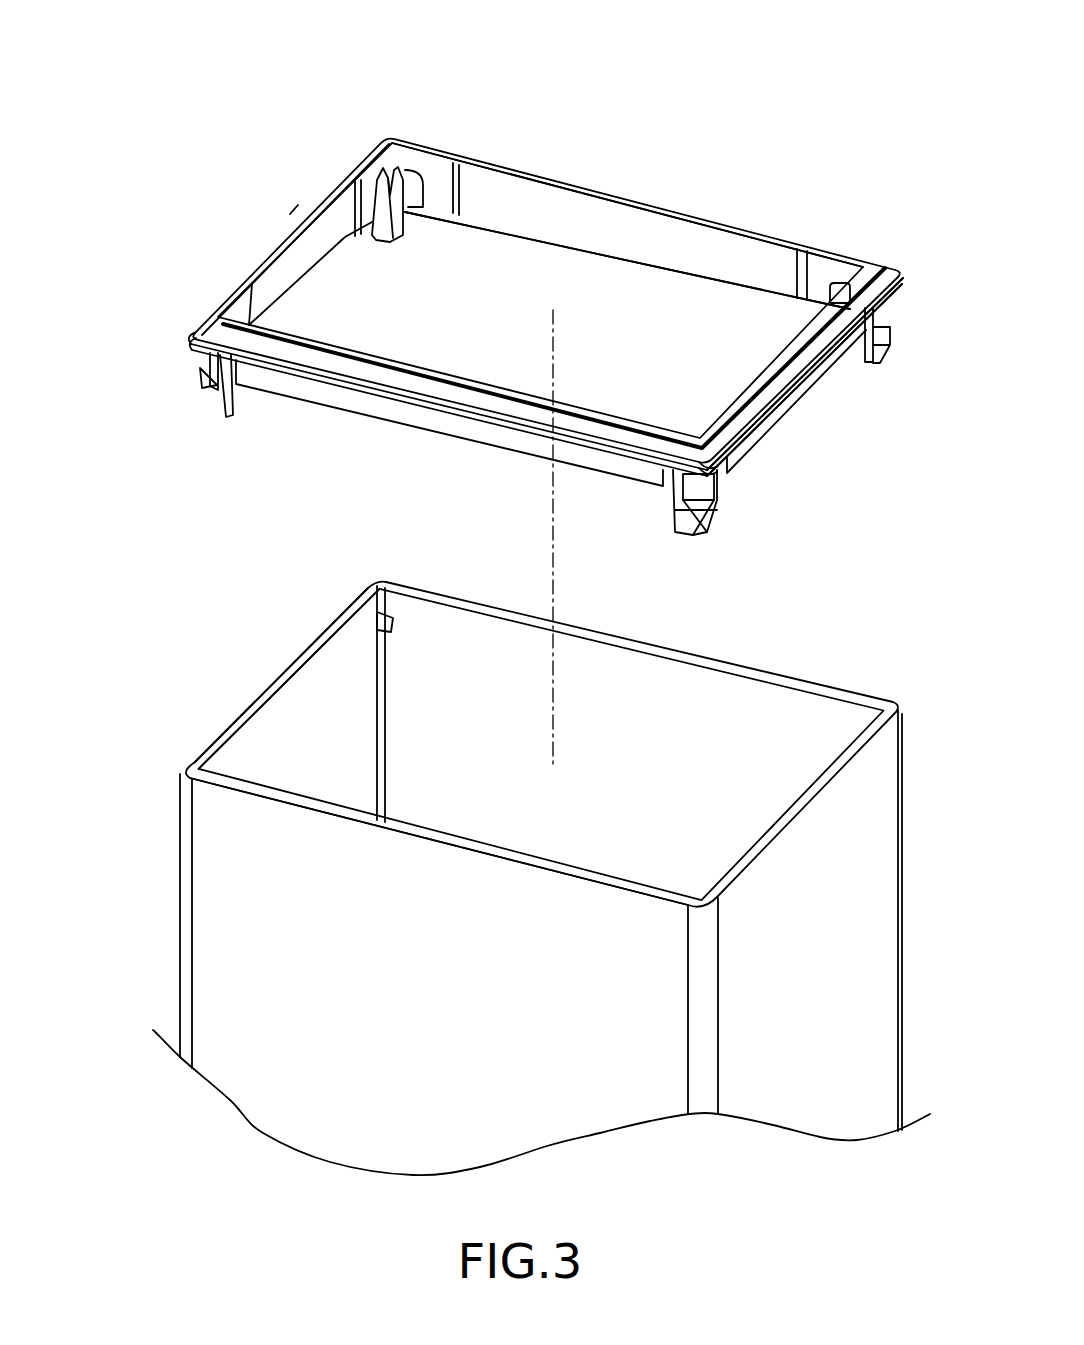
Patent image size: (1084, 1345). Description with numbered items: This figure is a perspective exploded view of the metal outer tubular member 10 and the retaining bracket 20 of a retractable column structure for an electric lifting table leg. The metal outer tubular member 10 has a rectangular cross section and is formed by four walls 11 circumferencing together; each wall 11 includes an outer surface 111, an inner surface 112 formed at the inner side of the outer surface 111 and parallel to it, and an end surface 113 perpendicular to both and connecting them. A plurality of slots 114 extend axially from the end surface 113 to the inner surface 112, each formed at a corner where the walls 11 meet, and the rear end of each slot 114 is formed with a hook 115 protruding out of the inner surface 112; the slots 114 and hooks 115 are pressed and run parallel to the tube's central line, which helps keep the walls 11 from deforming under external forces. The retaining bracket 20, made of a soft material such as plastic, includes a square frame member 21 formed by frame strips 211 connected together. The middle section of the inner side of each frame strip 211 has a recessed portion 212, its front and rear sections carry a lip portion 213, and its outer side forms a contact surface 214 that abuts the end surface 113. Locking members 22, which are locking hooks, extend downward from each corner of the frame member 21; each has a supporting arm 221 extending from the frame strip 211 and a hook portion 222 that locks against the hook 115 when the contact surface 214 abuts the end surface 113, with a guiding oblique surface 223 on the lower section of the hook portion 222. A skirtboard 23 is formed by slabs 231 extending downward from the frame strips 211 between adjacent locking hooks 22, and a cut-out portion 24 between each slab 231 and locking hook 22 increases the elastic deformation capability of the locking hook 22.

The metal outer tubular member 10 is at (497, 834).
The wall 11 is at (205, 743).
The outer surface 111 is at (265, 678).
The inner surface 112 is at (320, 680).
The end surface 113 is at (243, 715).
The slot 114 is at (380, 587).
The hook 115 is at (387, 623).
The retaining bracket 20 is at (497, 316).
The frame member 21 is at (364, 123).
The frame strip 211 is at (293, 210).
The recessed portion 212 is at (600, 217).
The lip portion 213 is at (827, 273).
The contact surface 214 is at (810, 383).
The locking member 22 is at (188, 456).
The supporting arm 221 is at (207, 360).
The hook portion 222 is at (201, 385).
The guiding oblique surface 223 is at (252, 428).
The skirtboard 23 is at (749, 467).
The slab 231 is at (799, 570).
The cut-out portion 24 is at (238, 388).